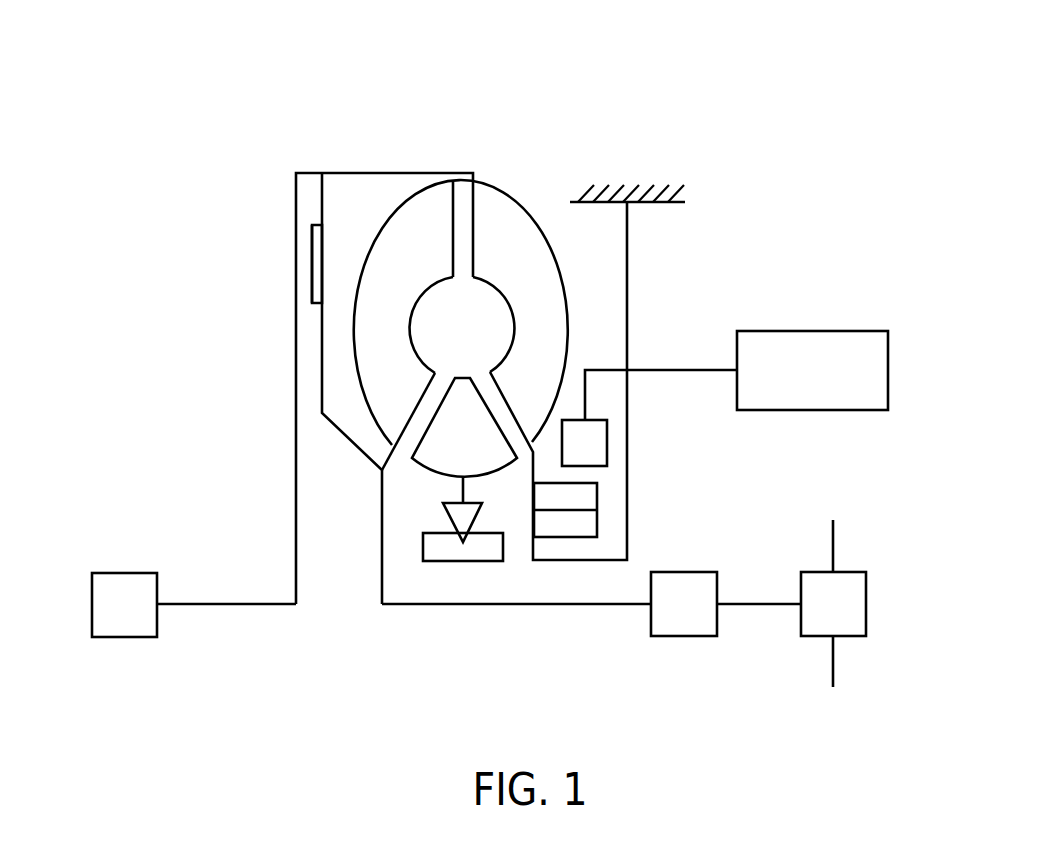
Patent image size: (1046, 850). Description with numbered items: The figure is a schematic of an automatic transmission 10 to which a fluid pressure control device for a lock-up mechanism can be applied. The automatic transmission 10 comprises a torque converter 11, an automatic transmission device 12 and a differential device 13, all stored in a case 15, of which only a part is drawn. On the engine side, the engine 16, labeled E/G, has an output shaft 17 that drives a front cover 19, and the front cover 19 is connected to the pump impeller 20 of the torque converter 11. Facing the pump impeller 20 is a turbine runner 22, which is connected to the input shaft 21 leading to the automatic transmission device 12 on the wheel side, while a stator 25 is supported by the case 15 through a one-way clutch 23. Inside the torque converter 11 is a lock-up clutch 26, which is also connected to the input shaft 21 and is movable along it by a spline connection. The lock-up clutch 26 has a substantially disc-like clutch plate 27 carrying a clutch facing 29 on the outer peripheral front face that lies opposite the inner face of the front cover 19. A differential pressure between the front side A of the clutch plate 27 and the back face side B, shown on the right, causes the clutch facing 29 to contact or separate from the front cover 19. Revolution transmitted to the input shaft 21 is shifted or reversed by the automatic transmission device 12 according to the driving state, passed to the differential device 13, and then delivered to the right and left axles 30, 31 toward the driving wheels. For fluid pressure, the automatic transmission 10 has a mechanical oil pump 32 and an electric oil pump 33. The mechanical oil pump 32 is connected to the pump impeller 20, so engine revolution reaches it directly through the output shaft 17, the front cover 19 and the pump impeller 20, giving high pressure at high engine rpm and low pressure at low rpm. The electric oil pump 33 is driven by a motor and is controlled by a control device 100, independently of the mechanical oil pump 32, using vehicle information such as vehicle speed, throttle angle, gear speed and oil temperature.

The automatic transmission 10 is at (616, 84).
The torque converter 11 is at (453, 151).
The automatic transmission device 12 is at (688, 637).
The differential device 13 is at (866, 604).
The case 15 is at (666, 207).
The engine 16 is at (137, 572).
The output shaft 17 is at (226, 602).
The front cover 19 is at (296, 332).
The pump impeller 20 is at (514, 212).
The input shaft 21 is at (478, 605).
The turbine runner 22 is at (409, 218).
The one-way clutch 23 is at (455, 517).
The stator 25 is at (462, 398).
The lock-up clutch 26 is at (319, 211).
The clutch plate 27 is at (316, 237).
The clutch facing 29 is at (313, 274).
The right axle 30 is at (833, 543).
The left axle 31 is at (833, 666).
The mechanical oil pump 32 is at (597, 492).
The electric oil pump 33 is at (607, 436).
The control device 100 is at (826, 331).
The front side A is at (307, 380).
The back face side B is at (343, 357).